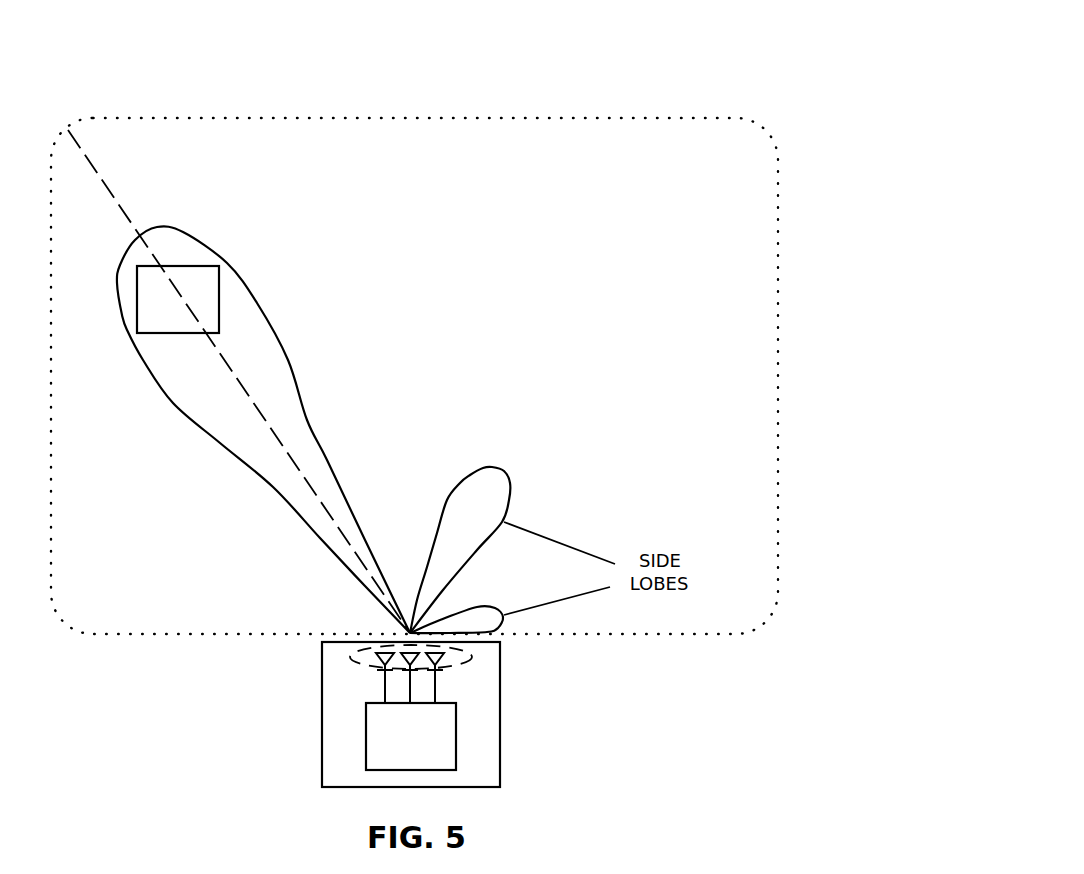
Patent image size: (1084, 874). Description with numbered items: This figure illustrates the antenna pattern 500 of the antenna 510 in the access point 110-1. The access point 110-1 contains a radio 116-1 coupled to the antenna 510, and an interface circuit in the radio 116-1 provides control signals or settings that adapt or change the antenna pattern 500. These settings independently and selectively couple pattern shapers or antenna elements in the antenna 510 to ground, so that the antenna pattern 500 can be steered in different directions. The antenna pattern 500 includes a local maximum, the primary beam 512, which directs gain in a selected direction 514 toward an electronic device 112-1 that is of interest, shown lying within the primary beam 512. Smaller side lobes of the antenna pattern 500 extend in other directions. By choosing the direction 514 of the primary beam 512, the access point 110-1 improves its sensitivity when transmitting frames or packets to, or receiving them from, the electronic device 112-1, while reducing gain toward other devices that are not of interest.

The antenna pattern 500 is at (707, 118).
The primary beam 512 is at (183, 232).
The electronic device 112-1 is at (178, 299).
The direction 514 is at (268, 432).
The antenna 510 is at (467, 662).
The radio 116-1 is at (411, 736).
The access point 110-1 is at (502, 715).